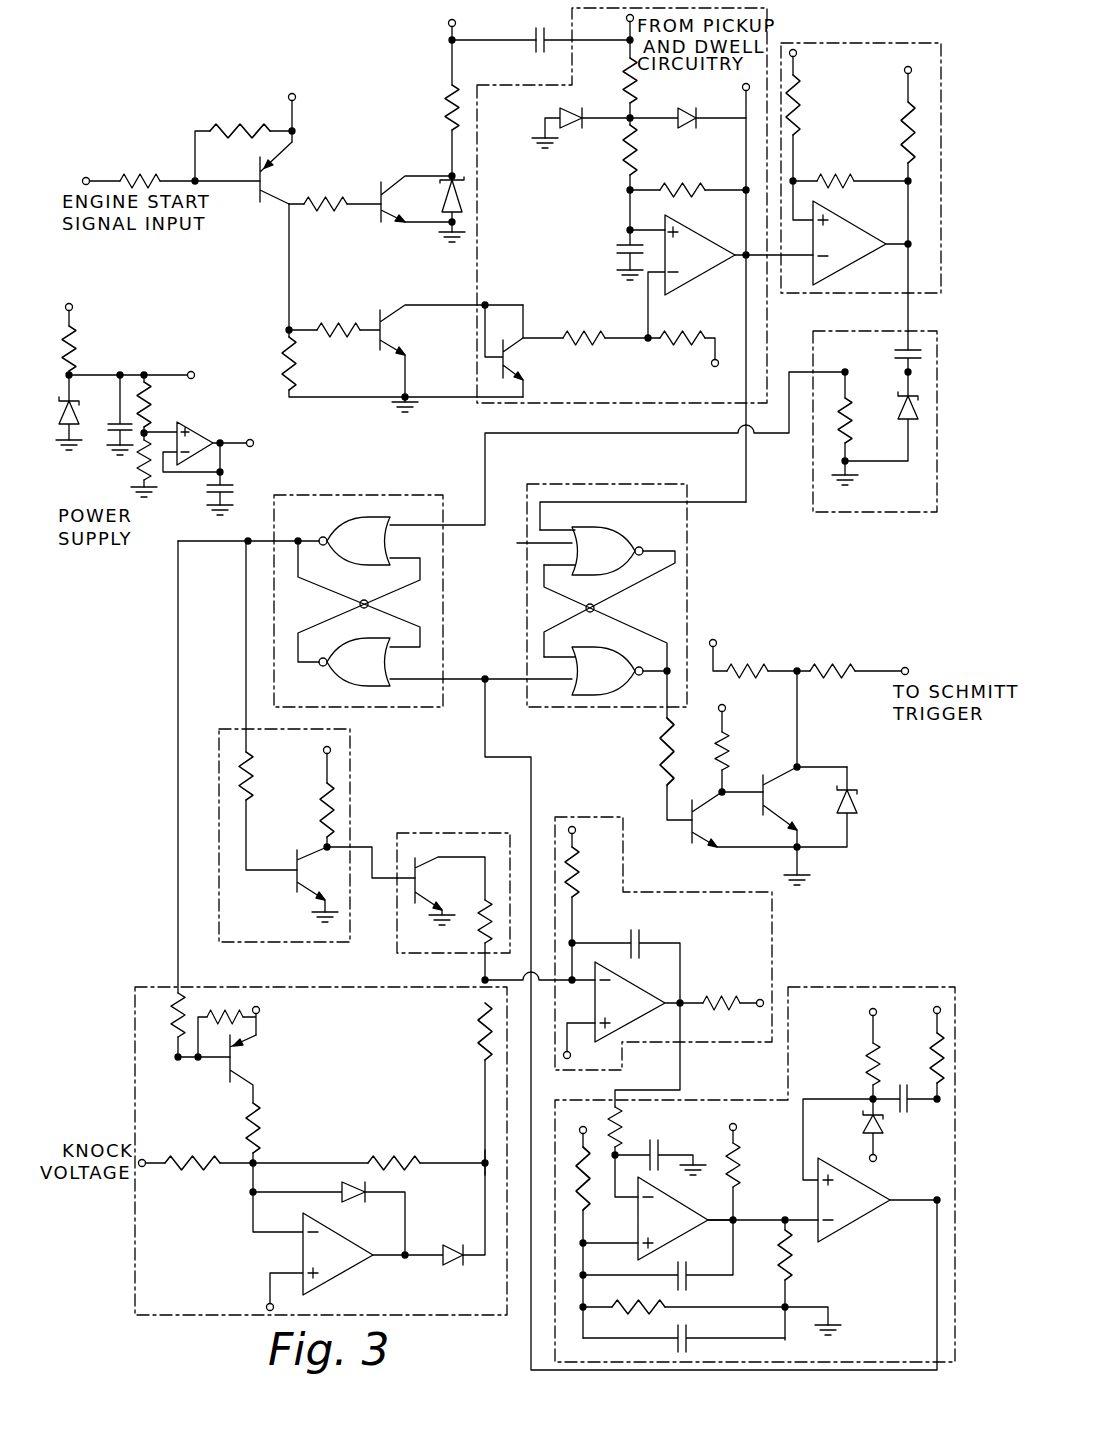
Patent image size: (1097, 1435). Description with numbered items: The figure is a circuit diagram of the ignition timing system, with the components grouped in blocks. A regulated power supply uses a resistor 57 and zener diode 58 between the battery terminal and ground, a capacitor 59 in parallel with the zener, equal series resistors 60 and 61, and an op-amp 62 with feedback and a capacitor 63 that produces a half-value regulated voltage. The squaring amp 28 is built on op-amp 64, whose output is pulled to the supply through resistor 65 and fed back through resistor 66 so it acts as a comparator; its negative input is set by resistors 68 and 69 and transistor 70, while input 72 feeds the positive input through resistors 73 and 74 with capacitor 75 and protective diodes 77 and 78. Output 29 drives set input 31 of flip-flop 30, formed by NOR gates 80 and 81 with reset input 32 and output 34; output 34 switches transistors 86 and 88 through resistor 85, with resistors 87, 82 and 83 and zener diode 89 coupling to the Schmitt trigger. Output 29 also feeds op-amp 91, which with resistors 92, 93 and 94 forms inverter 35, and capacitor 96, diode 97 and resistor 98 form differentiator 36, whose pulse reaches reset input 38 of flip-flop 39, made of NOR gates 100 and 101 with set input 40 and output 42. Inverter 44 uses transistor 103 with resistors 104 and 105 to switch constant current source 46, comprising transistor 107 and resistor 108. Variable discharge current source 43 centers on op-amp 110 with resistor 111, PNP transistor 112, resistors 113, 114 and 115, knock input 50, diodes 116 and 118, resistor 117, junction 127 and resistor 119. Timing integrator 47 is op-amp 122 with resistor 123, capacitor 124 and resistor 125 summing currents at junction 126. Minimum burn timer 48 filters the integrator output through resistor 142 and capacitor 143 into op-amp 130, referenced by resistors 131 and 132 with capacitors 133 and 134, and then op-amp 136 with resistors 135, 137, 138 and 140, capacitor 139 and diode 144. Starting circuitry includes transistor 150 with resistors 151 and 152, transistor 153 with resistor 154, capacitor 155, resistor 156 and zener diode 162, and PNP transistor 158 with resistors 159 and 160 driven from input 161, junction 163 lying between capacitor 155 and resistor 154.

The squaring amp 28 is at (772, 40).
The output of op-amp 64 29 is at (741, 262).
The flip-flop 30 is at (692, 543).
The set input 31 is at (518, 543).
The reset input 32 is at (540, 679).
The output 34 is at (646, 666).
The inverter 35 is at (862, 43).
The differentiator 36 is at (856, 330).
The reset input 38 is at (408, 523).
The flip-flop 39 is at (448, 592).
The set input 40 is at (392, 678).
The output 42 is at (320, 536).
The variable discharge current source 43 is at (138, 984).
The inverter 44 is at (216, 727).
The constant current source 46 is at (462, 831).
The timing integrator 47 is at (602, 815).
The minimum burn timer 48 is at (896, 984).
The input 50 is at (145, 1168).
The resistor 57 is at (78, 336).
The zener diode 58 is at (80, 432).
The capacitor 59 is at (119, 416).
The resistor 60 is at (148, 386).
The resistor 61 is at (140, 461).
The operational amplifier 62 is at (198, 438).
The capacitor 63 is at (229, 488).
The operational amplifier 64 is at (700, 242).
The resistor 65 is at (743, 152).
The resistor 66 is at (686, 188).
The resistor 68 is at (690, 345).
The resistor 69 is at (588, 342).
The transistor 70 is at (525, 372).
The input 72 is at (626, 22).
The resistor 73 is at (627, 68).
The resistor 74 is at (625, 165).
The capacitor 75 is at (625, 248).
The diode 77 is at (572, 130).
The diode 78 is at (692, 110).
The NOR gate 80 is at (612, 540).
The NOR gate 81 is at (596, 666).
The resistor 82 is at (750, 668).
The resistor 83 is at (835, 668).
The resistor 85 is at (662, 746).
The NPN transistor 86 is at (706, 836).
The resistor 87 is at (732, 751).
The NPN transistor 88 is at (780, 801).
The zener diode 89 is at (856, 792).
The op-amp 91 is at (850, 240).
The resistor 92 is at (903, 126).
The resistor 93 is at (838, 178).
The resistor 94 is at (799, 96).
The capacitor 96 is at (895, 352).
The diode 97 is at (905, 424).
The resistor 98 is at (851, 411).
The NOR gate 100 is at (345, 516).
The NOR gate 101 is at (341, 672).
The NPN transistor 103 is at (291, 886).
The resistor 104 is at (336, 811).
The resistor 105 is at (252, 776).
The NPN transistor 107 is at (428, 881).
The resistor 108 is at (476, 940).
The op-amp 110 is at (345, 1260).
The resistor 111 is at (262, 1120).
The PNP transistor 112 is at (255, 1058).
The resistor 113 is at (170, 1021).
The resistor 114 is at (238, 1013).
The resistor 115 is at (190, 1160).
The diode 116 is at (448, 1245).
The resistor 117 is at (398, 1160).
The diode 118 is at (362, 1200).
The resistor 119 is at (481, 1030).
The op-amp 122 is at (620, 998).
The resistor 123 is at (716, 1000).
The capacitor 124 is at (642, 936).
The resistor 125 is at (578, 886).
The junction 126 is at (572, 985).
The junction 127 is at (484, 1160).
The op-amp 130 is at (660, 1216).
The resistor 131 is at (591, 1201).
The resistor 132 is at (645, 1311).
The capacitor 133 is at (690, 1281).
The capacitor 134 is at (690, 1336).
The resistor 135 is at (755, 1166).
The op-amp 136 is at (876, 1212).
The resistor 137 is at (798, 1263).
The resistor 138 is at (934, 1046).
The capacitor 139 is at (880, 1086).
The resistor 140 is at (873, 1073).
The resistor 142 is at (622, 1131).
The capacitor 143 is at (666, 1146).
The diode 144 is at (861, 1116).
The transistor 150 is at (396, 336).
The resistor 151 is at (330, 326).
The resistor 152 is at (296, 362).
The transistor 153 is at (372, 210).
The resistor 154 is at (448, 106).
The capacitor 155 is at (534, 36).
The resistor 156 is at (322, 201).
The PNP transistor 158 is at (258, 200).
The resistor 159 is at (241, 126).
The resistor 160 is at (152, 178).
The input 161 is at (88, 177).
The zener diode 162 is at (444, 194).
The junction 163 is at (449, 40).